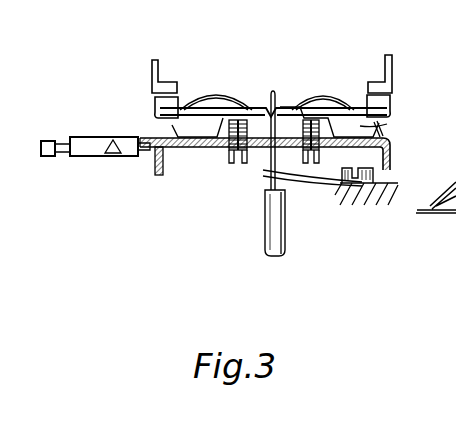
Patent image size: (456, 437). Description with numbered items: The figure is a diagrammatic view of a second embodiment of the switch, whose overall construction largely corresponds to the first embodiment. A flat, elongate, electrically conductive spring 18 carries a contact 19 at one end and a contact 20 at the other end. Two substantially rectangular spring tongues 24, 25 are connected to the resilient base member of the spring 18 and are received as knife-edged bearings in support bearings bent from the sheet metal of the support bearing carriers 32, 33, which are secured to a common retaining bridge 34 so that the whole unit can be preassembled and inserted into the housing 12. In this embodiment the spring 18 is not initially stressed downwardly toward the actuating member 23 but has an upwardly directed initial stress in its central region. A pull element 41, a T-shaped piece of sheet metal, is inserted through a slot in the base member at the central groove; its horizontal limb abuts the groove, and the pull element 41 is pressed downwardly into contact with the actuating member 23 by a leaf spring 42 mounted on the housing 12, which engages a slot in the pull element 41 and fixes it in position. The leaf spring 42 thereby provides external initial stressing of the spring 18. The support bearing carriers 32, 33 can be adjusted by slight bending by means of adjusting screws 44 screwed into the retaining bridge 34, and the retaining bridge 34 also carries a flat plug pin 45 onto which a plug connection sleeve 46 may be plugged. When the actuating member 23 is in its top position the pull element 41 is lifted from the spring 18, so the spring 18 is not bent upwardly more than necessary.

The housing 12 is at (386, 203).
The spring 18 is at (303, 108).
The contact 19 is at (155, 107).
The contact 20 is at (391, 110).
The actuating member 23 is at (270, 232).
The spring tongue 24 is at (205, 101).
The spring tongue 25 is at (340, 100).
The support bearing carrier 32 is at (243, 112).
The support bearing carrier 33 is at (383, 124).
The retaining bridge 34 is at (202, 150).
The pull element 41 is at (275, 96).
The leaf spring 42 is at (331, 183).
The adjusting screw 44 is at (246, 160).
The flat plug pin 45 is at (150, 152).
The plug connection sleeve 46 is at (84, 138).